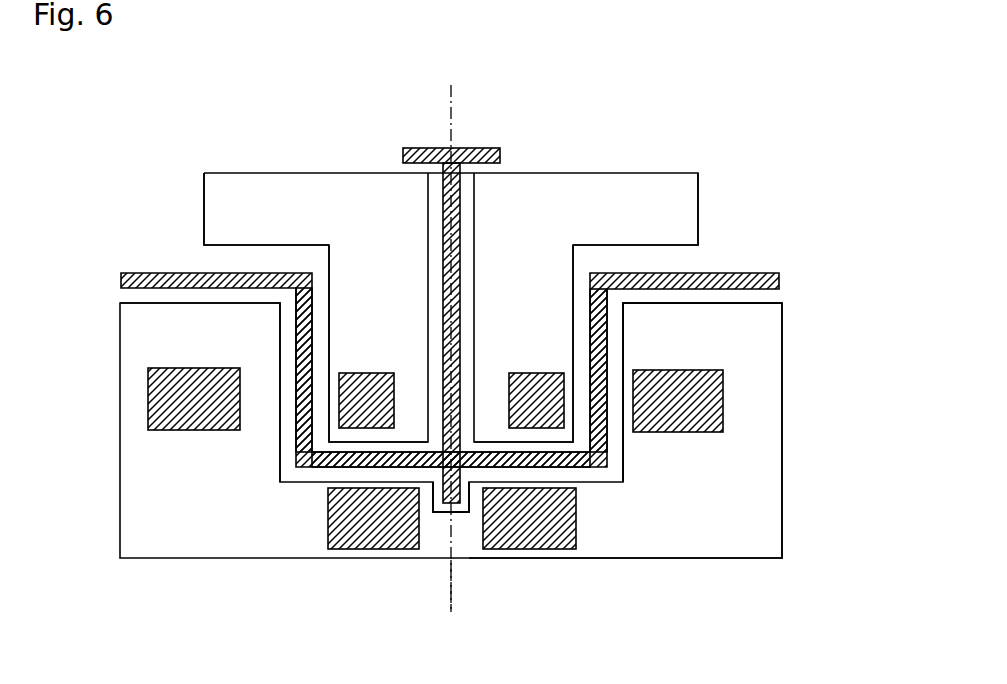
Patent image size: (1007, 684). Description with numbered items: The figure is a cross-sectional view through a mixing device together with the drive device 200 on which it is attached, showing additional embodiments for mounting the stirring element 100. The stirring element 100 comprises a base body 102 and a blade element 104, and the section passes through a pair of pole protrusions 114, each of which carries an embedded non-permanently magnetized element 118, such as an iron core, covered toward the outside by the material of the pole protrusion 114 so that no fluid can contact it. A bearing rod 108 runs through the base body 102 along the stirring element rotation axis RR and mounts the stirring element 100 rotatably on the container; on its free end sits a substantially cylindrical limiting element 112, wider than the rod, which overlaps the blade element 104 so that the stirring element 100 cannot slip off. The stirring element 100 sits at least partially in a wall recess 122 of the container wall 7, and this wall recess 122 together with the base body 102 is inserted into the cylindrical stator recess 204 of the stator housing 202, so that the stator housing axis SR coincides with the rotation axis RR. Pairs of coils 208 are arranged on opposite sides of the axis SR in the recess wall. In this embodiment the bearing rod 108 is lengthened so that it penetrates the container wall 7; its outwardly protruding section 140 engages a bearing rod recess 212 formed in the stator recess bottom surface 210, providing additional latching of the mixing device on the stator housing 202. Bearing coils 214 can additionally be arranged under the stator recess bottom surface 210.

The container wall 7 is at (137, 275).
The stirring element 100 is at (600, 191).
The base body 102 is at (560, 268).
The blade element 104 is at (234, 200).
The bearing rod 108 is at (443, 187).
The limiting element 112 is at (428, 155).
The pole protrusion 114 is at (348, 313).
The non-permanently magnetized element 118 is at (347, 405).
The wall recess 122 is at (310, 440).
The outwardly protruding section 140 is at (443, 507).
The drive device 200 is at (131, 541).
The stator housing 202 is at (749, 541).
The stator recess 204 is at (623, 467).
The coils 208 is at (163, 398).
The stator recess bottom surface 210 is at (612, 470).
The bearing rod recess 212 is at (457, 508).
The bearing coil 214 is at (353, 527).
The stirring element rotation axis RR is at (452, 100).
The stator housing axis SR is at (452, 598).